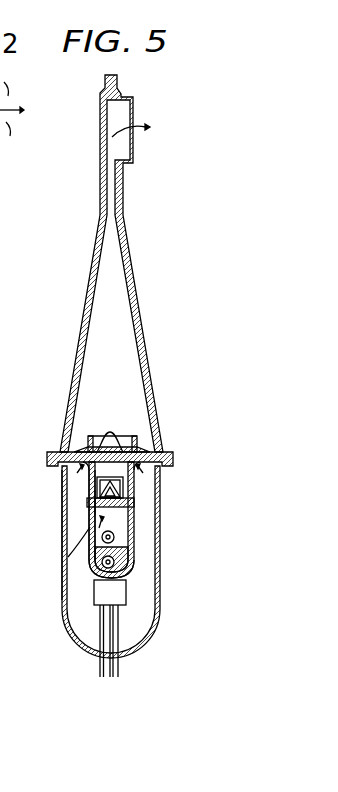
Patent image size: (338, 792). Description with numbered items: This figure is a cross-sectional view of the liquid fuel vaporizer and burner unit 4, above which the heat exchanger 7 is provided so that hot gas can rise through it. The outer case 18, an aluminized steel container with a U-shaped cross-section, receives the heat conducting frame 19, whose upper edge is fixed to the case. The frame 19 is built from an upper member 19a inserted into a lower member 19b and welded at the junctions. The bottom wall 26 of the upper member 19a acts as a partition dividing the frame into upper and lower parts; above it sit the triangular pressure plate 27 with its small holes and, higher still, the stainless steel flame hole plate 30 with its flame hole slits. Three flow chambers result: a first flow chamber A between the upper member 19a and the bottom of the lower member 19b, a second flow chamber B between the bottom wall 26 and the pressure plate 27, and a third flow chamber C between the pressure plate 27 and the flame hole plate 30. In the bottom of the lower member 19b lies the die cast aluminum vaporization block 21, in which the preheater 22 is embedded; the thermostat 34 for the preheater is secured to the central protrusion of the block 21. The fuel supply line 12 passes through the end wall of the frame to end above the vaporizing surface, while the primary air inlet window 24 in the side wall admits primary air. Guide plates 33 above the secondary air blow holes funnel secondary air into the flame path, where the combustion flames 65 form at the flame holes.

The heat exchanger 7 is at (146, 333).
The upper member 19a is at (164, 468).
The guide plate 33 is at (87, 444).
The combustion flame 65 is at (95, 439).
The outer case 18 is at (160, 615).
The liquid fuel vaporizer and burner unit 4 is at (60, 555).
The heat conducting frame 19 is at (133, 543).
The lower member 19b is at (133, 557).
The flame hole plate 30 is at (88, 476).
The pressure plate 27 is at (88, 491).
The second flow chamber B is at (79, 501).
The primary air inlet window 24 is at (87, 521).
The third flow chamber C is at (124, 488).
The bottom wall 26 is at (131, 501).
The first flow chamber A is at (117, 521).
The fuel supply line 12 is at (131, 532).
The vaporization block 21 is at (130, 571).
The preheater 22 is at (93, 573).
The thermostat 34 is at (92, 604).